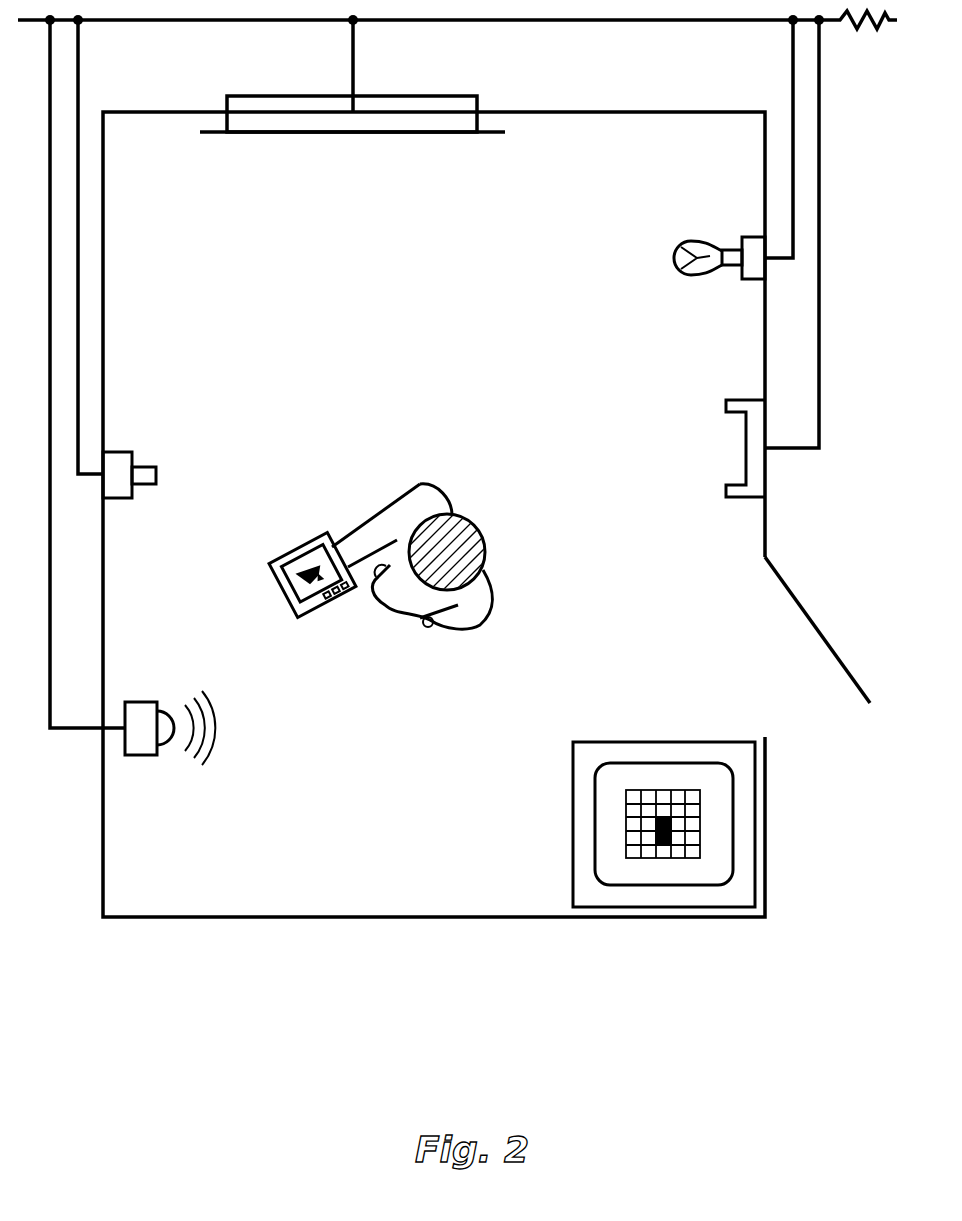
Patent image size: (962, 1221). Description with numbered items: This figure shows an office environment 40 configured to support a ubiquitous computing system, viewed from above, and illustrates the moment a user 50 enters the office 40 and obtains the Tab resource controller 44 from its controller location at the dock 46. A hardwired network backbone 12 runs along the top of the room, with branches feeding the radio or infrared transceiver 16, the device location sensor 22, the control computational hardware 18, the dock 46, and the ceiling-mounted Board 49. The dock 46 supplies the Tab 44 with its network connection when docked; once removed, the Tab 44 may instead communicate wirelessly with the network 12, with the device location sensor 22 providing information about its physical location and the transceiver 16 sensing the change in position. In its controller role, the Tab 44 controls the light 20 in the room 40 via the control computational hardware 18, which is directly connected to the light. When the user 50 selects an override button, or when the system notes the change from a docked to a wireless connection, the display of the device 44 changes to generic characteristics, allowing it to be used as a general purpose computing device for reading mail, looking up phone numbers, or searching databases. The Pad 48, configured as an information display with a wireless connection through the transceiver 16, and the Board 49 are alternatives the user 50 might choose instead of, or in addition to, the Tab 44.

The hardwired network backbone 12 is at (840, 22).
The radio or infrared transceiver 16 is at (148, 702).
The control computational hardware 18 is at (752, 237).
The light 20 is at (678, 242).
The device location sensor 22 is at (118, 452).
The office environment 40 is at (385, 945).
The Tab configured as a resource controller 44 is at (295, 562).
The dock 46 is at (740, 400).
The Pad 48 is at (668, 742).
The Board 49 is at (400, 123).
The user 50 is at (428, 492).